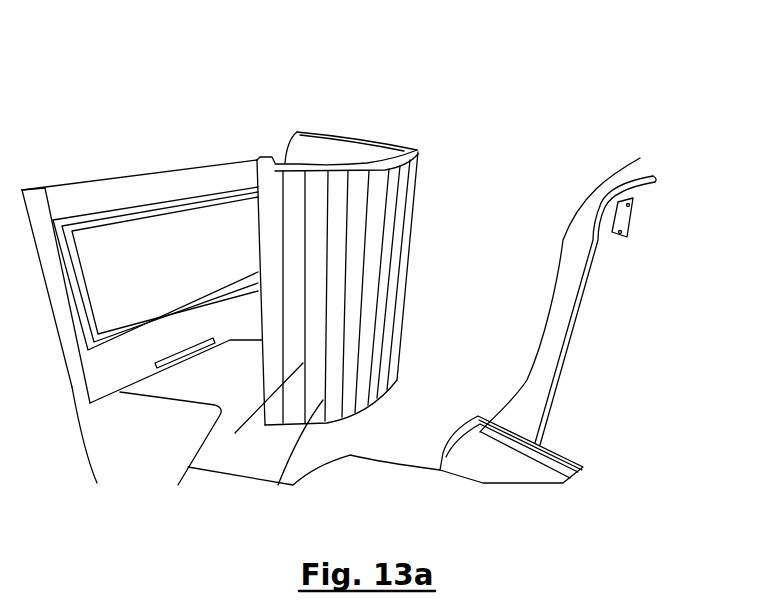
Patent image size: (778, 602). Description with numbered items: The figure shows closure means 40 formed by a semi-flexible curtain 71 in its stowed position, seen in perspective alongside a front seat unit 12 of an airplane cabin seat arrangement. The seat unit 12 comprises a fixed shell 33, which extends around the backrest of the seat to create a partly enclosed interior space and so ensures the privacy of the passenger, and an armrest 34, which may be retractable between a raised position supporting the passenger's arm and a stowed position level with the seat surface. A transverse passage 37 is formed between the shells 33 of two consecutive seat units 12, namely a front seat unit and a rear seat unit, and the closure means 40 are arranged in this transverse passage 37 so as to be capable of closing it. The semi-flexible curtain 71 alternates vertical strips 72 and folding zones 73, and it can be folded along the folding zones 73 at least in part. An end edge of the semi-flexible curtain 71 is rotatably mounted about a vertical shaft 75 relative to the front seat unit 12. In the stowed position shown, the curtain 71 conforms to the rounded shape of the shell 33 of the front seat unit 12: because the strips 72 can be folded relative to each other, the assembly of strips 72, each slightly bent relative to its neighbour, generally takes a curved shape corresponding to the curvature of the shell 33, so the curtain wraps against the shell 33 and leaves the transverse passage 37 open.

The seat unit 12 is at (502, 232).
The fixed shell 33 is at (335, 160).
The armrest 34 is at (640, 158).
The transverse passage 37 is at (422, 405).
The closure means 40 is at (314, 228).
The semi-flexible curtain 71 is at (371, 192).
The vertical strips 72 is at (275, 365).
The folding zones 73 is at (323, 400).
The vertical shaft 75 is at (404, 146).